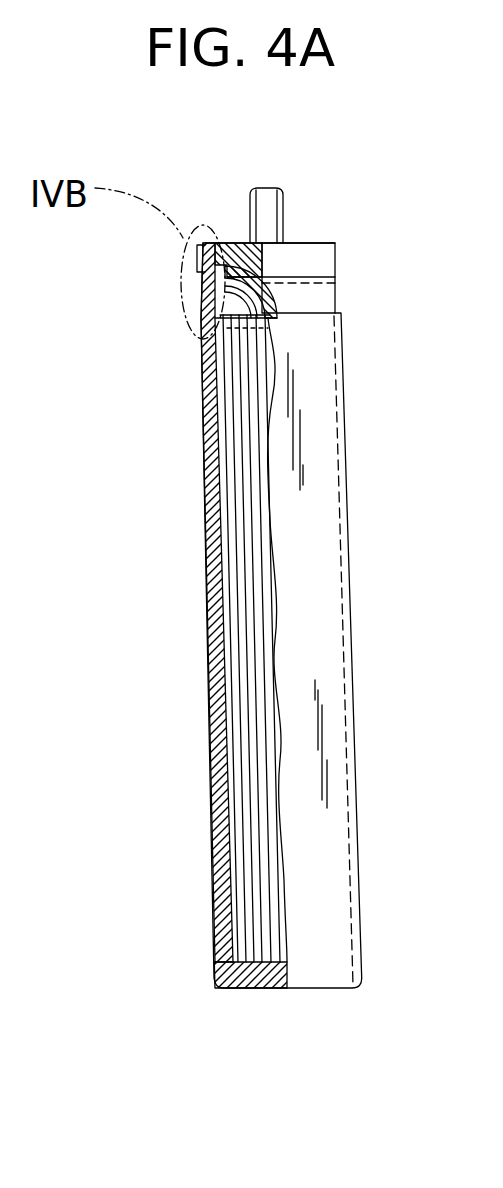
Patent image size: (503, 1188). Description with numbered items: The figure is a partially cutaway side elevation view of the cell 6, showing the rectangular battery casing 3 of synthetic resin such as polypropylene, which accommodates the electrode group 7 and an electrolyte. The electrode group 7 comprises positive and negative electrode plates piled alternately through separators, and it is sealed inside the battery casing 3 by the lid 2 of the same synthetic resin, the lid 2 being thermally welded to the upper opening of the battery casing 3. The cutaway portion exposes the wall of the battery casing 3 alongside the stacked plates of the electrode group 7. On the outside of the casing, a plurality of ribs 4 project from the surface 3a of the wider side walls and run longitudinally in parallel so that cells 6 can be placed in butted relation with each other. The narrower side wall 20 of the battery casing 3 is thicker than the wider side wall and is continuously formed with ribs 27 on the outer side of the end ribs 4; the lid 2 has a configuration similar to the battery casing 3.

The lid 2 is at (337, 247).
The ribs 27 is at (335, 284).
The battery casing 3 is at (325, 298).
The surface of the wider side walls 3a is at (210, 726).
The ribs 4 is at (202, 443).
The cell 6 is at (350, 366).
The electrode group 7 is at (245, 556).
The narrower side walls 20 is at (330, 918).